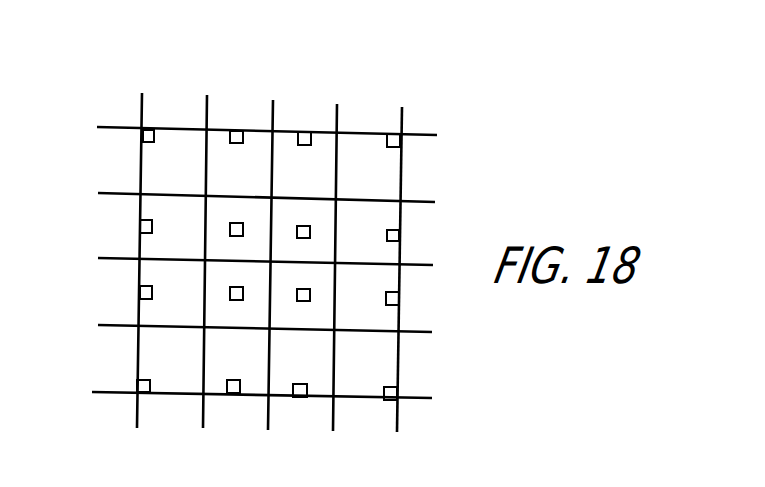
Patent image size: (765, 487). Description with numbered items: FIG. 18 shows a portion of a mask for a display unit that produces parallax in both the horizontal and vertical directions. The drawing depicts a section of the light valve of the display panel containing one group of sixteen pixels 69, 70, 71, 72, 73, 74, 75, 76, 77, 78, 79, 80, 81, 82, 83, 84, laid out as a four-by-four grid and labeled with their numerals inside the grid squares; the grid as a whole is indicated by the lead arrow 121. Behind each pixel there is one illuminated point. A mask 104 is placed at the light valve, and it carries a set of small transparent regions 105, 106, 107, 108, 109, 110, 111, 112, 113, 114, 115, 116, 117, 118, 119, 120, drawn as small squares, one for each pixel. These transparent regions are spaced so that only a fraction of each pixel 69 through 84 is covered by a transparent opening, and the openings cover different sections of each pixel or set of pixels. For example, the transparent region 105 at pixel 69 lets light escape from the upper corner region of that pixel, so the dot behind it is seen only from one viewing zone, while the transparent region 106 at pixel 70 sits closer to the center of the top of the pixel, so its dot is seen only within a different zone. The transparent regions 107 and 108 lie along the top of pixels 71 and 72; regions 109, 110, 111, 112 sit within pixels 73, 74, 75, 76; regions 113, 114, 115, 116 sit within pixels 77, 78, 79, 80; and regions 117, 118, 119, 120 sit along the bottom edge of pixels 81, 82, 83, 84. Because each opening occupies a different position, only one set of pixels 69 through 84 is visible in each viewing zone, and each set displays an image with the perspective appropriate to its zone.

The electrode grid array 121 is at (308, 254).
The mask 104 is at (403, 364).
The transparent region 105 is at (149, 129).
The transparent region 106 is at (239, 130).
The transparent region 107 is at (305, 131).
The transparent region 108 is at (393, 133).
The transparent region 109 is at (144, 220).
The transparent region 110 is at (250, 212).
The transparent region 111 is at (315, 215).
The transparent region 112 is at (402, 236).
The transparent region 113 is at (141, 291).
The transparent region 114 is at (252, 304).
The transparent region 115 is at (311, 297).
The transparent region 116 is at (400, 300).
The transparent region 117 is at (140, 379).
The transparent region 118 is at (233, 394).
The transparent region 119 is at (300, 400).
The transparent region 120 is at (389, 401).
The pixel 69 is at (174, 160).
The pixel 70 is at (239, 161).
The pixel 71 is at (304, 162).
The pixel 72 is at (369, 164).
The pixel 73 is at (173, 226).
The pixel 74 is at (238, 228).
The pixel 75 is at (303, 231).
The pixel 76 is at (368, 230).
The pixel 77 is at (172, 291).
The pixel 78 is at (237, 292).
The pixel 79 is at (302, 294).
The pixel 80 is at (367, 295).
The pixel 81 is at (171, 358).
The pixel 82 is at (236, 359).
The pixel 83 is at (301, 361).
The pixel 84 is at (366, 362).